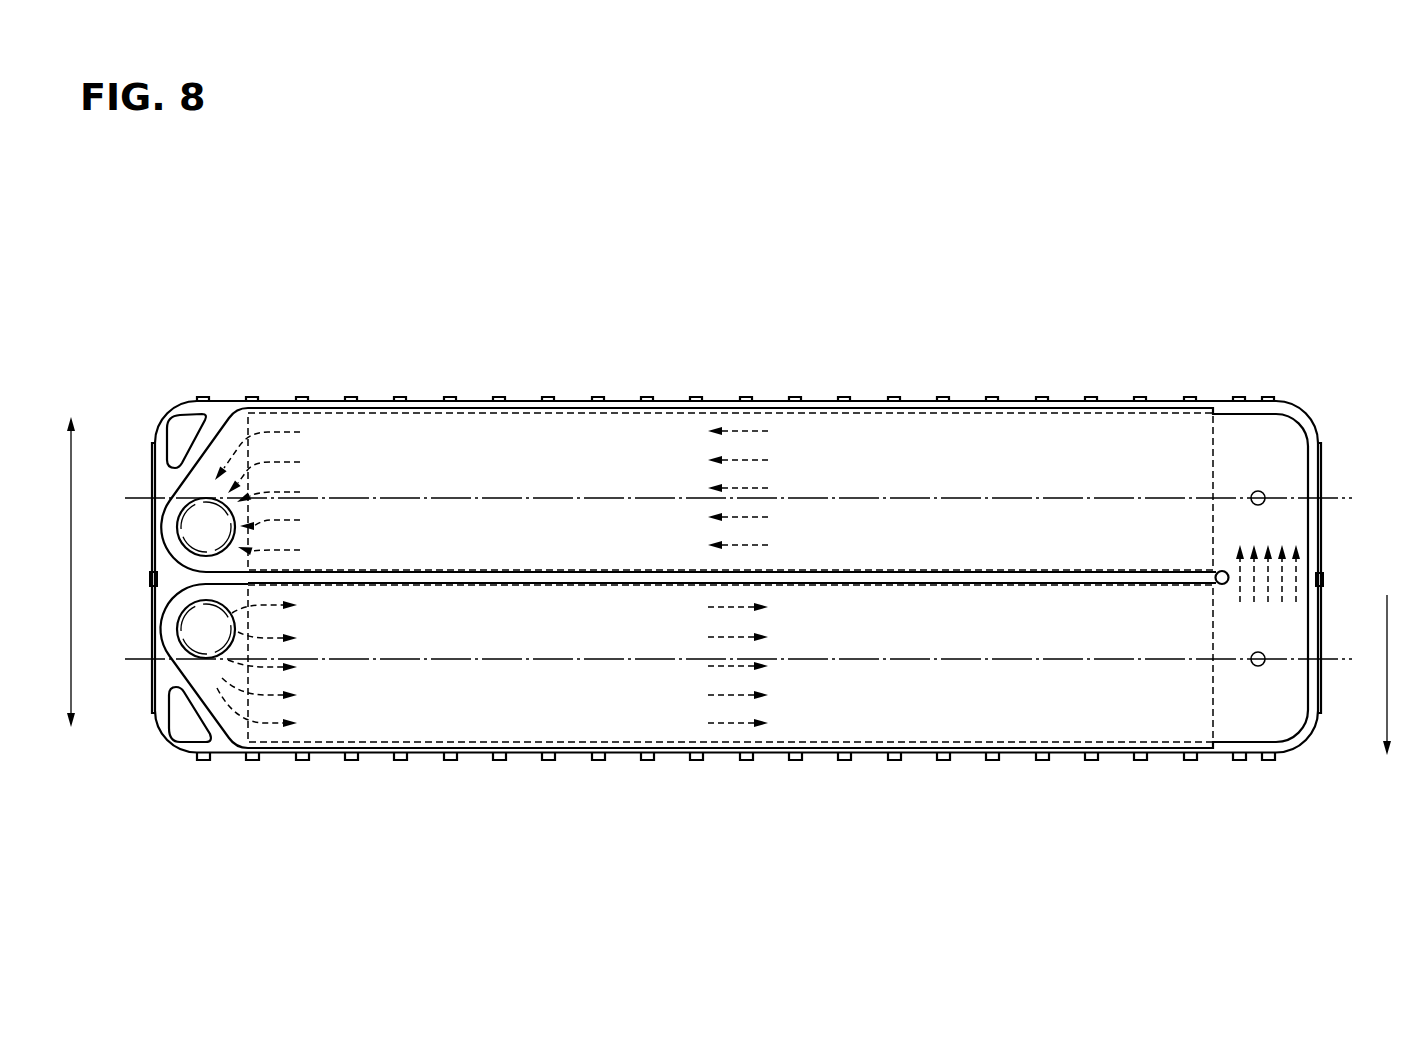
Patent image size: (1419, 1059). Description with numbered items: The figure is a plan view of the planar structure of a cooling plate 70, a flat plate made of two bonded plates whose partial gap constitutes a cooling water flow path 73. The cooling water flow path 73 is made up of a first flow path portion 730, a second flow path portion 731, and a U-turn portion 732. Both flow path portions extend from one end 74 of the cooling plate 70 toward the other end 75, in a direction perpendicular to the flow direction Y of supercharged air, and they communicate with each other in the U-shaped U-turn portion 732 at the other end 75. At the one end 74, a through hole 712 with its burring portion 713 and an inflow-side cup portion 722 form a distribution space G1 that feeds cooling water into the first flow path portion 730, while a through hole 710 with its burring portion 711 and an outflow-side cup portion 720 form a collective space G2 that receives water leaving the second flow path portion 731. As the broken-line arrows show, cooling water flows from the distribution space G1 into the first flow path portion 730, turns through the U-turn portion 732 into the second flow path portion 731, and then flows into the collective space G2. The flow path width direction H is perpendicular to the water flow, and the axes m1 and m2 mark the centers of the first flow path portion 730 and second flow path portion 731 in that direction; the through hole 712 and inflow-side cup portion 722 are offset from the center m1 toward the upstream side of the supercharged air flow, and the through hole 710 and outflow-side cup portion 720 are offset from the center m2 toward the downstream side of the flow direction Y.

The cooling plate 70 is at (1219, 270).
The cooling water flow path 73 is at (730, 577).
The second flow path portion 731 is at (610, 432).
The first flow path portion 730 is at (625, 702).
The U-turn portion 732 is at (1285, 520).
The other end 75 is at (1321, 548).
The one end 74 is at (152, 545).
The burring portion 711 is at (150, 576).
The burring portion 713 is at (222, 612).
The through hole 710 is at (204, 441).
The outflow-side cup portion 720 is at (205, 496).
The through hole 712 is at (203, 719).
The inflow-side cup portion 722 is at (194, 652).
The distribution space G1 is at (190, 625).
The collective space G2 is at (188, 517).
The center axis of first flow path portion m1 is at (908, 663).
The center axis of second flow path portion m2 is at (917, 492).
The flow path width direction H is at (62, 572).
The flow direction of supercharged air Y is at (1399, 675).